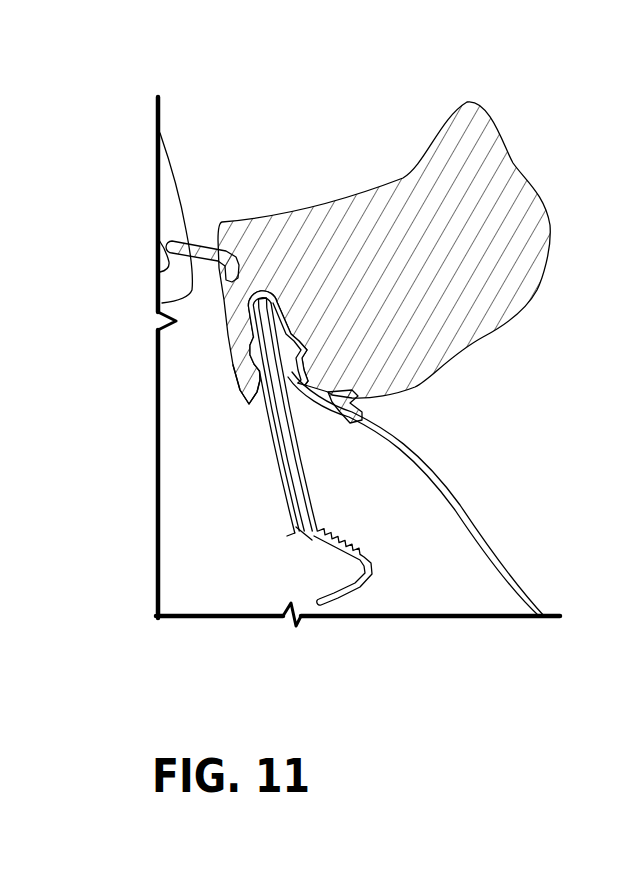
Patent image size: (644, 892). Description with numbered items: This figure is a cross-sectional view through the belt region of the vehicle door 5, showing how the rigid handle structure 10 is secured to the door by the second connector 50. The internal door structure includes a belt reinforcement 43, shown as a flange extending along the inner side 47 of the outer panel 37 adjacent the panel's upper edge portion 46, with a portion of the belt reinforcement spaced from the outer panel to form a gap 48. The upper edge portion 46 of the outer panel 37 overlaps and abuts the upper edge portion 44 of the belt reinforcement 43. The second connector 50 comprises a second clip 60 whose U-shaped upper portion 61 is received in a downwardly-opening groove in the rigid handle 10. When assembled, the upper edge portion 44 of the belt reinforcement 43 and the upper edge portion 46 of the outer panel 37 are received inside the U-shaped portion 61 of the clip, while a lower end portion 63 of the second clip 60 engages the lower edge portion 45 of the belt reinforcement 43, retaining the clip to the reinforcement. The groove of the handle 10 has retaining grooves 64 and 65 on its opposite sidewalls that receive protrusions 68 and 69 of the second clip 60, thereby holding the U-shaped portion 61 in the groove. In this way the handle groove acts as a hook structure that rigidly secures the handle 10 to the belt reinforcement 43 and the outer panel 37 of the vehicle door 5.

The vehicle door 5 is at (494, 541).
The rigid handle structure 10 is at (548, 262).
The outer panel 37 is at (461, 505).
The belt reinforcement 43 is at (319, 500).
The upper edge portion of belt reinforcement 44 is at (257, 292).
The lower edge portion of belt reinforcement 45 is at (313, 544).
The upper edge portion of outer panel 46 is at (276, 292).
The inner side of outer panel 47 is at (506, 552).
The gap 48 is at (353, 478).
The second connector 50 is at (246, 451).
The second clip 60 is at (284, 497).
The U-shaped upper portion 61 is at (256, 404).
The lower end portion of second clip 63 is at (335, 528).
The retaining groove 64 is at (252, 372).
The retaining groove 65 is at (297, 351).
The protrusion 68 is at (252, 348).
The protrusion 69 is at (297, 350).